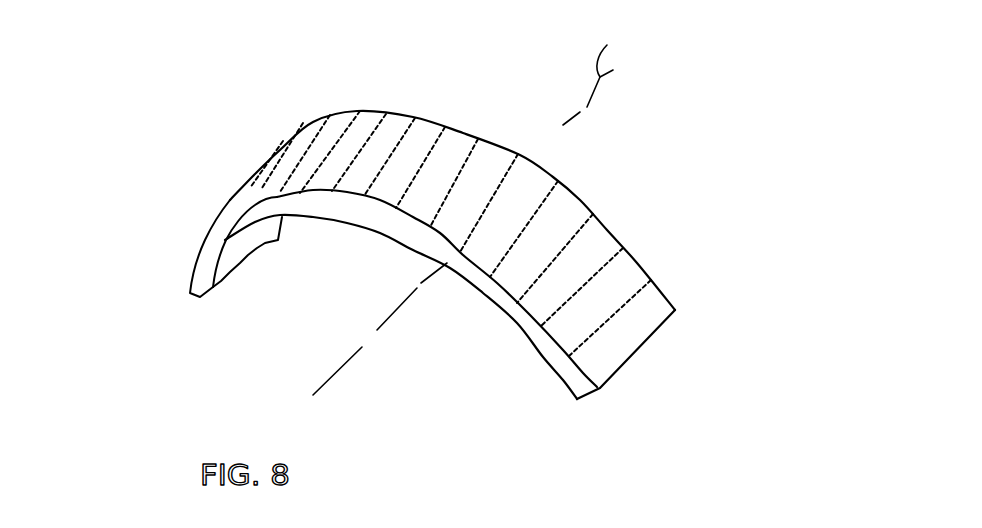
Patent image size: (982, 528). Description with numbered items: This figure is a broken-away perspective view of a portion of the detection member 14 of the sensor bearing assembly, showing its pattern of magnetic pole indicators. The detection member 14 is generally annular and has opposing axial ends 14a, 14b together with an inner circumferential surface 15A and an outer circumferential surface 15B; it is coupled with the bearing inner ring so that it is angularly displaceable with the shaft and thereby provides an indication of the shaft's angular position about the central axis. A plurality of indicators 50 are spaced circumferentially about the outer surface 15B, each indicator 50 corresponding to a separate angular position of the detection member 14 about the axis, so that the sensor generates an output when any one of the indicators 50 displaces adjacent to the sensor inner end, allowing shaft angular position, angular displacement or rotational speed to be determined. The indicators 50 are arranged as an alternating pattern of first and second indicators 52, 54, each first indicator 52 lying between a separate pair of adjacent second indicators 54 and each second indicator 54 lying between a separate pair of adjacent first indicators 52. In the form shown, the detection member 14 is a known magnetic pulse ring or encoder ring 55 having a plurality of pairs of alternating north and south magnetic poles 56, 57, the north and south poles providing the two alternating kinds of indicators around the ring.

The detection member 14 is at (126, 131).
The axial end 14a is at (518, 318).
The axial end 14b is at (570, 193).
The inner circumferential surface 15A is at (442, 270).
The outer circumferential surface 15B is at (372, 190).
The indicators 50 is at (397, 97).
The first indicators 52 is at (475, 133).
The second indicators 54 is at (445, 119).
The magnetic pulse ring or encoder ring 55 is at (184, 244).
The north magnetic pole 56 is at (410, 120).
The south magnetic pole 57 is at (374, 120).